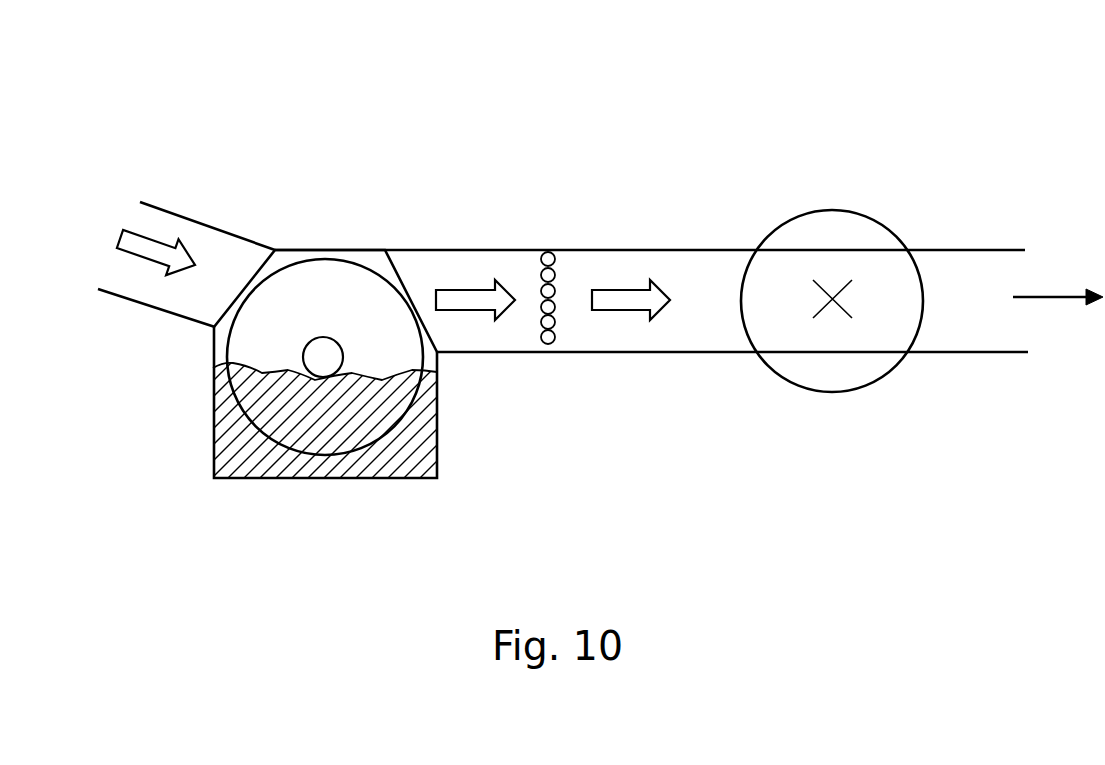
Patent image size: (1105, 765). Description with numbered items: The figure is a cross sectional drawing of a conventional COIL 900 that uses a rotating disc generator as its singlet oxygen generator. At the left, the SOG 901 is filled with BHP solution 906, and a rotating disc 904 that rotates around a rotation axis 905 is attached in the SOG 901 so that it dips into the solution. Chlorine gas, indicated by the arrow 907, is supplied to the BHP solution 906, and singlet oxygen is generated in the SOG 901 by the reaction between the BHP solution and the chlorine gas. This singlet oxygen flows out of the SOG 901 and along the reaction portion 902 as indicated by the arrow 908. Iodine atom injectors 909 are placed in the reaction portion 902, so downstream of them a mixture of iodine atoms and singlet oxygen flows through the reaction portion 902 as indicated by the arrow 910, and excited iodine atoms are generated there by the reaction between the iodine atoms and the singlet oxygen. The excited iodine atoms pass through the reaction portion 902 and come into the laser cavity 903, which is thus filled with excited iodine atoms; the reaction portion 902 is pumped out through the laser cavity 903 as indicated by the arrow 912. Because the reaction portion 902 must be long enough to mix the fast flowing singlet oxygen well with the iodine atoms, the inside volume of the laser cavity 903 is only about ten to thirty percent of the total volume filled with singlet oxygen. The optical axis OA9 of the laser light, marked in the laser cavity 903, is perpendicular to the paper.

The COIL 900 is at (129, 113).
The SOG 901 is at (422, 207).
The reaction portion 902 is at (748, 205).
The laser cavity 903 is at (855, 212).
The rotating disc 904 is at (272, 340).
The rotation axis 905 is at (322, 365).
The BHP solution 906 is at (413, 443).
The chlorine gas 907 is at (145, 253).
The direction of singlet oxygen 908 is at (478, 295).
The iodine atom injector 909 is at (548, 340).
The direction of flow of singlet oxygen and iodine atoms 910 is at (620, 297).
The exhaust direction 912 is at (1053, 297).
The optical axis OA9 is at (835, 300).